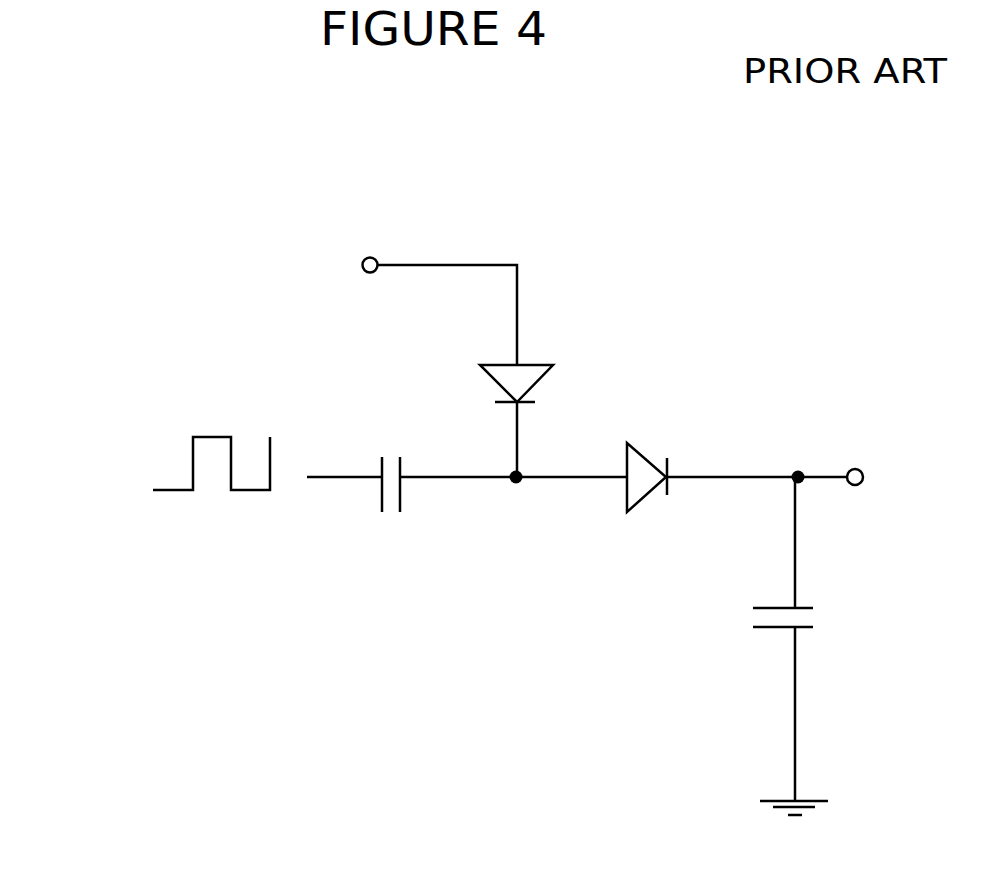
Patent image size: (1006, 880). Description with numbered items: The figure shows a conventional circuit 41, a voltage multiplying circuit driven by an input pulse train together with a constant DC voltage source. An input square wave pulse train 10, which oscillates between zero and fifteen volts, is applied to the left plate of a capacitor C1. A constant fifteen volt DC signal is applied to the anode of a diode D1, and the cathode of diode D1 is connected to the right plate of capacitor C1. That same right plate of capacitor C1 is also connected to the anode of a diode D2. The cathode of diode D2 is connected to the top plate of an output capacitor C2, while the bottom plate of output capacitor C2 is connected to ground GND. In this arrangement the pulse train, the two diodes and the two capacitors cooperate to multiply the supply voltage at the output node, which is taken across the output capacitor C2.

The conventional circuit 41 is at (610, 468).
The input square wave pulse train 10 is at (194, 426).
The diode D1 is at (498, 344).
The diode D2 is at (630, 438).
The capacitor C1 is at (374, 446).
The output capacitor C2 is at (765, 579).
The ground GND is at (765, 774).